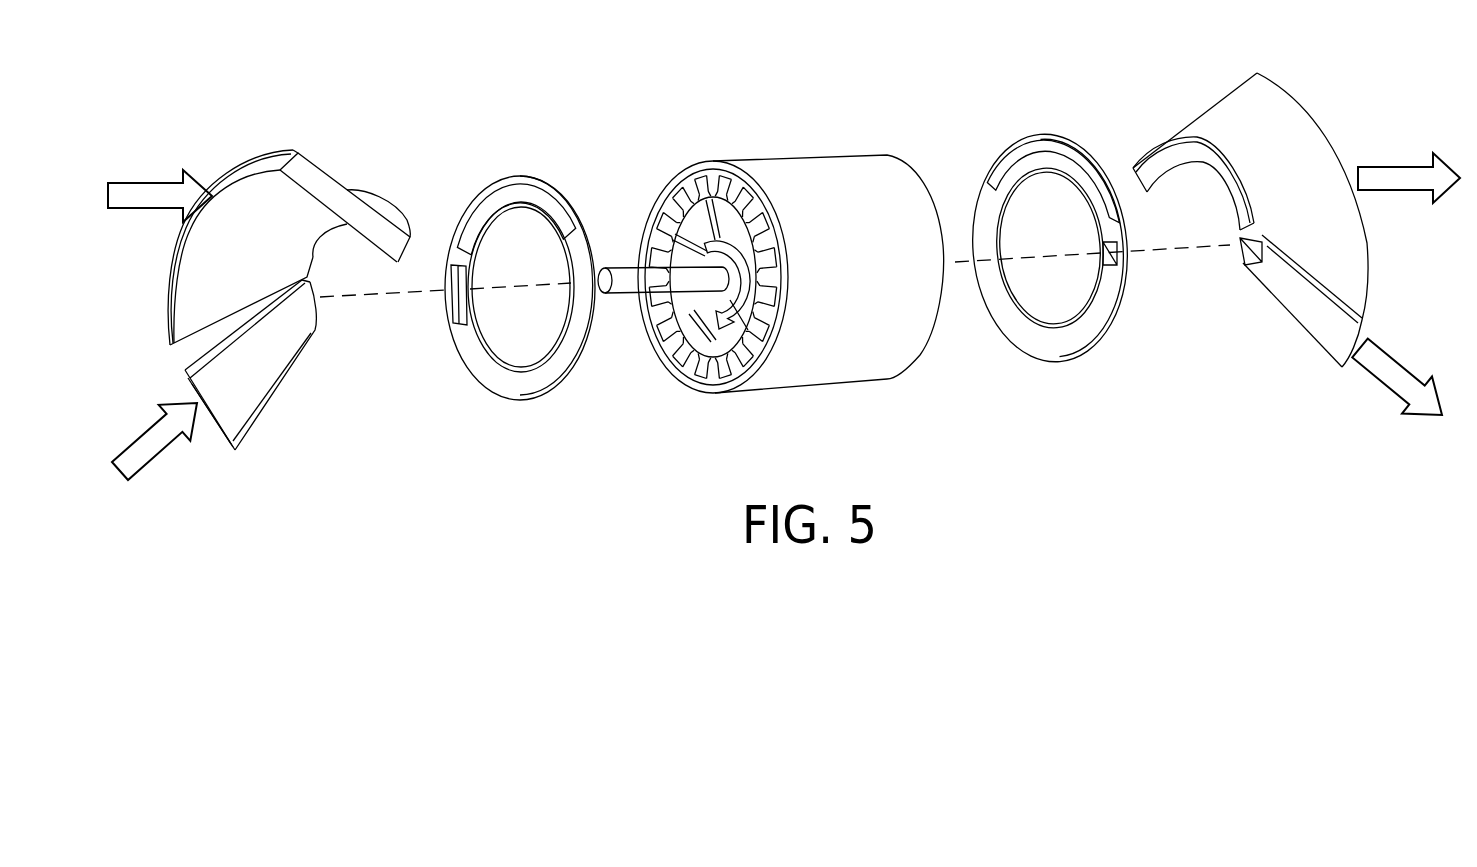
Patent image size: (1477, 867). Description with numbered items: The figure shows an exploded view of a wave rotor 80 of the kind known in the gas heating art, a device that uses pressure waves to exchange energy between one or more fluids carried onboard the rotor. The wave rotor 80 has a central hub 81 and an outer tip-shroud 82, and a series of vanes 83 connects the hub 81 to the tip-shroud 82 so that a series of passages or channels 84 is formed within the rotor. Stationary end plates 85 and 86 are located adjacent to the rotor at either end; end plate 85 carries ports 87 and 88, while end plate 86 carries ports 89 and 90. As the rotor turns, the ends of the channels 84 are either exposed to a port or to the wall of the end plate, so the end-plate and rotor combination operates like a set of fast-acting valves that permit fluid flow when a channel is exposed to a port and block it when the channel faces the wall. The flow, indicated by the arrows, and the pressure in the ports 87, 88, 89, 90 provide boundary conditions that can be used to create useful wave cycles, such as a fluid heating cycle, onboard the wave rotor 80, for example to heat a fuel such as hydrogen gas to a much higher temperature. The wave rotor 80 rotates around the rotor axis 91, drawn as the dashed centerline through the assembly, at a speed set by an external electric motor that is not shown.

The wave rotor 80 is at (778, 182).
The hub 81 is at (678, 367).
The tip-shroud 82 is at (715, 382).
The vanes 83 is at (730, 365).
The channels 84 is at (708, 178).
The stationary end plate 85 is at (470, 356).
The stationary end plate 86 is at (1048, 340).
The port 87 is at (525, 192).
The port 88 is at (453, 273).
The port 89 is at (1042, 158).
The port 90 is at (1113, 248).
The rotor axis 91 is at (957, 263).